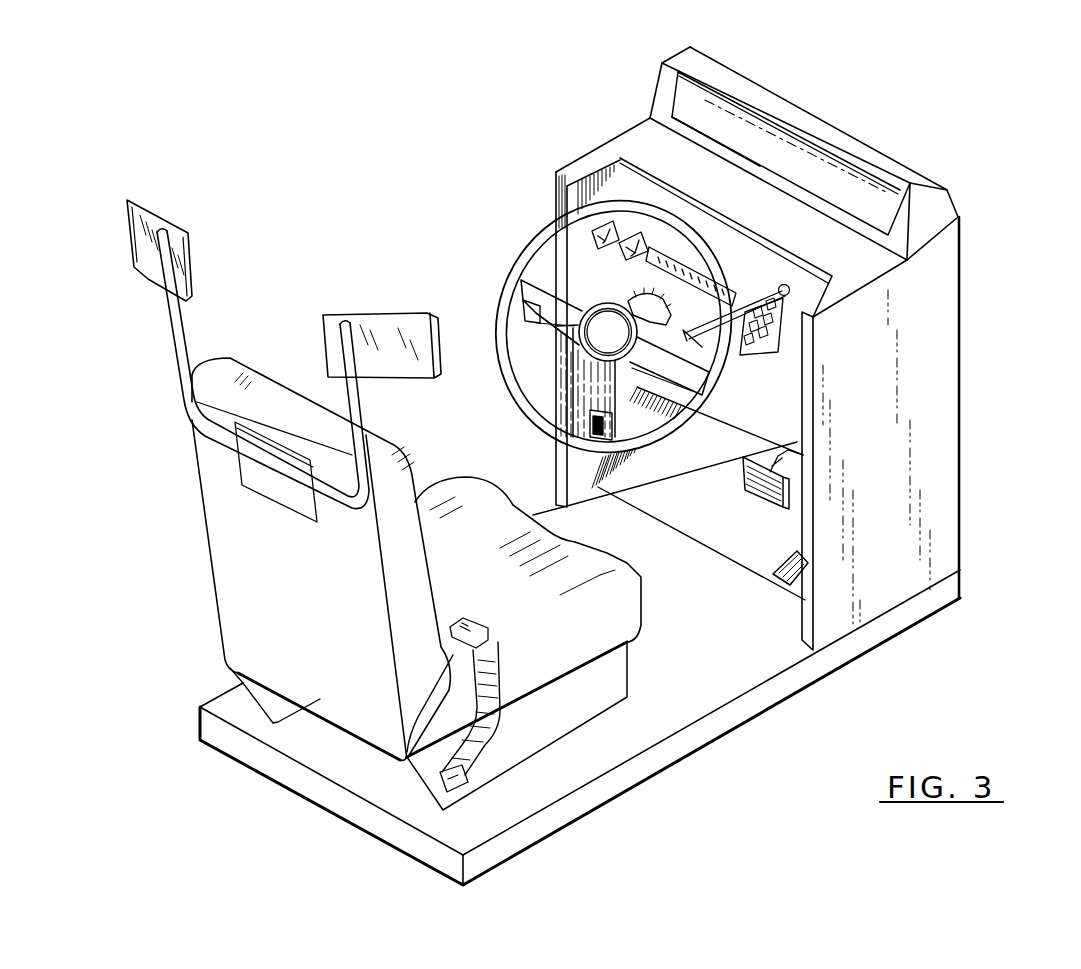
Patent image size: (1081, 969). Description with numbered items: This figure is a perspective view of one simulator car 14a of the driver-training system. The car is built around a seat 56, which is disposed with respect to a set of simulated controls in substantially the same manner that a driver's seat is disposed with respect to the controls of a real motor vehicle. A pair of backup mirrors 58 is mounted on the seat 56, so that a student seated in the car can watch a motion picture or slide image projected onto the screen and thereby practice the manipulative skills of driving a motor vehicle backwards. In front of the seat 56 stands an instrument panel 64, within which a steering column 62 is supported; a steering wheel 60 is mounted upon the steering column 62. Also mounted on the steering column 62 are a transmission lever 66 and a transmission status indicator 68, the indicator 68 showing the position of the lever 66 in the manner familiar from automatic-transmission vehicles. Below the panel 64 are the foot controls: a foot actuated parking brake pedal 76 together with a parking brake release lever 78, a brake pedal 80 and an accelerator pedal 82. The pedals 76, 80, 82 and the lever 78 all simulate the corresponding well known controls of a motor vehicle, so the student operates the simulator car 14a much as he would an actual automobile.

The simulator car 14a is at (941, 312).
The seat 56 is at (228, 552).
The backup mirrors 58 is at (323, 323).
The steering wheel 60 is at (525, 252).
The steering column 62 is at (657, 378).
The instrument panel 64 is at (770, 212).
The transmission lever 66 is at (774, 306).
The transmission status indicator 68 is at (643, 297).
The parking brake pedal 76 is at (589, 405).
The parking brake release lever 78 is at (516, 318).
The brake pedal 80 is at (745, 488).
The accelerator pedal 82 is at (786, 568).